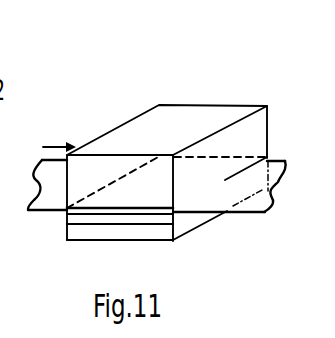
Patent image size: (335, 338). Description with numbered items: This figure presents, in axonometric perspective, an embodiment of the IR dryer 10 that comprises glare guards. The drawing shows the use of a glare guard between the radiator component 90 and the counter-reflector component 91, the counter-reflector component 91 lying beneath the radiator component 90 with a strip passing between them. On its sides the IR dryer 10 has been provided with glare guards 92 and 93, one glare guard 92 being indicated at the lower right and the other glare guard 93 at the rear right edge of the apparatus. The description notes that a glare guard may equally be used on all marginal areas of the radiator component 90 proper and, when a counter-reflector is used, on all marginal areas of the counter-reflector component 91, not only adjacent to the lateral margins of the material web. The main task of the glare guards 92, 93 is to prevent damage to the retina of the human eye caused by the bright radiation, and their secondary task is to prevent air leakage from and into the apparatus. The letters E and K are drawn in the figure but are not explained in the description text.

The IR dryer 10 is at (152, 82).
The radiator component 90 is at (187, 107).
The counter-reflector component 91 is at (123, 242).
The glare guard 92 is at (176, 216).
The glare guard 93 is at (268, 159).
The strip / plate E is at (41, 180).
The direction arrow K is at (52, 145).